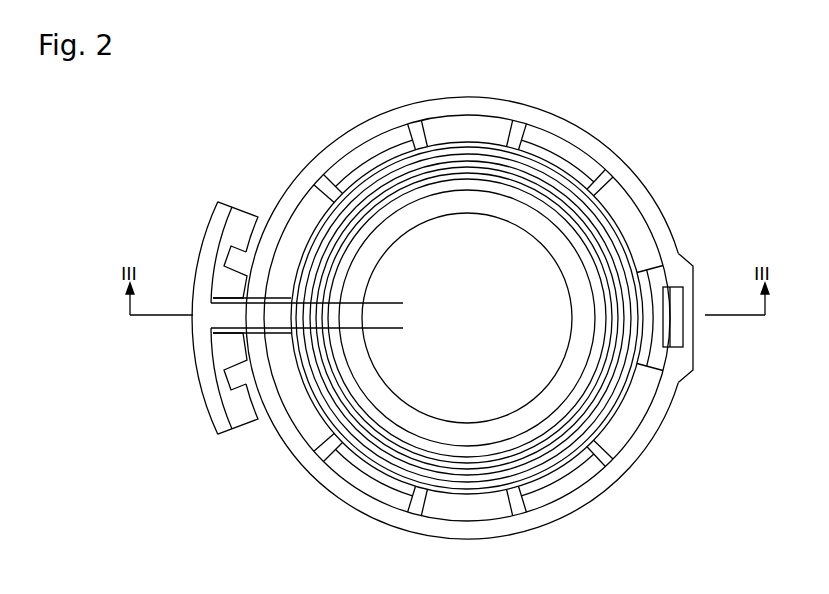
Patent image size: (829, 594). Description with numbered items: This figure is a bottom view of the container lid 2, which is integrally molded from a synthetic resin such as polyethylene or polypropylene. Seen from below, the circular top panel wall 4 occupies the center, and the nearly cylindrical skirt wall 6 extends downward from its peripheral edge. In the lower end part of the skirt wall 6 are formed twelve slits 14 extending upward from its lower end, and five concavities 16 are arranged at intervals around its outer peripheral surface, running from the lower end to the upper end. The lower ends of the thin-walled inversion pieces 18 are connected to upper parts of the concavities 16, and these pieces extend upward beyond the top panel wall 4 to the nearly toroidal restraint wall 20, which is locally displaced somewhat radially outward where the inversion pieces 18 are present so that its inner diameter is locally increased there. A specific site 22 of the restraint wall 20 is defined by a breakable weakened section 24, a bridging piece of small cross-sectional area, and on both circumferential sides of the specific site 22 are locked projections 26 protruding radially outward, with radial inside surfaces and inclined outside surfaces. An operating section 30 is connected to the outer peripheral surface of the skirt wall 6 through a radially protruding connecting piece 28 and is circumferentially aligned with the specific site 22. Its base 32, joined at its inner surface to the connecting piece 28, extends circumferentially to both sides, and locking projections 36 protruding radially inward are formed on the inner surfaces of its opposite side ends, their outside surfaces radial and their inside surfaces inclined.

The container lid 2 is at (660, 170).
The top panel wall 4 is at (472, 330).
The skirt wall 6 is at (273, 433).
The slits 14 is at (427, 520).
The concavities 16 is at (343, 505).
The thin-walled inversion pieces 18 is at (587, 500).
The restraint wall 20 is at (660, 432).
The specific site 22 is at (397, 277).
The weakened section 24 is at (212, 348).
The locked projections 26 is at (213, 262).
The connecting piece 28 is at (212, 292).
The operating section 30 is at (193, 331).
The base 32 is at (208, 396).
The locking projections 36 is at (322, 380).